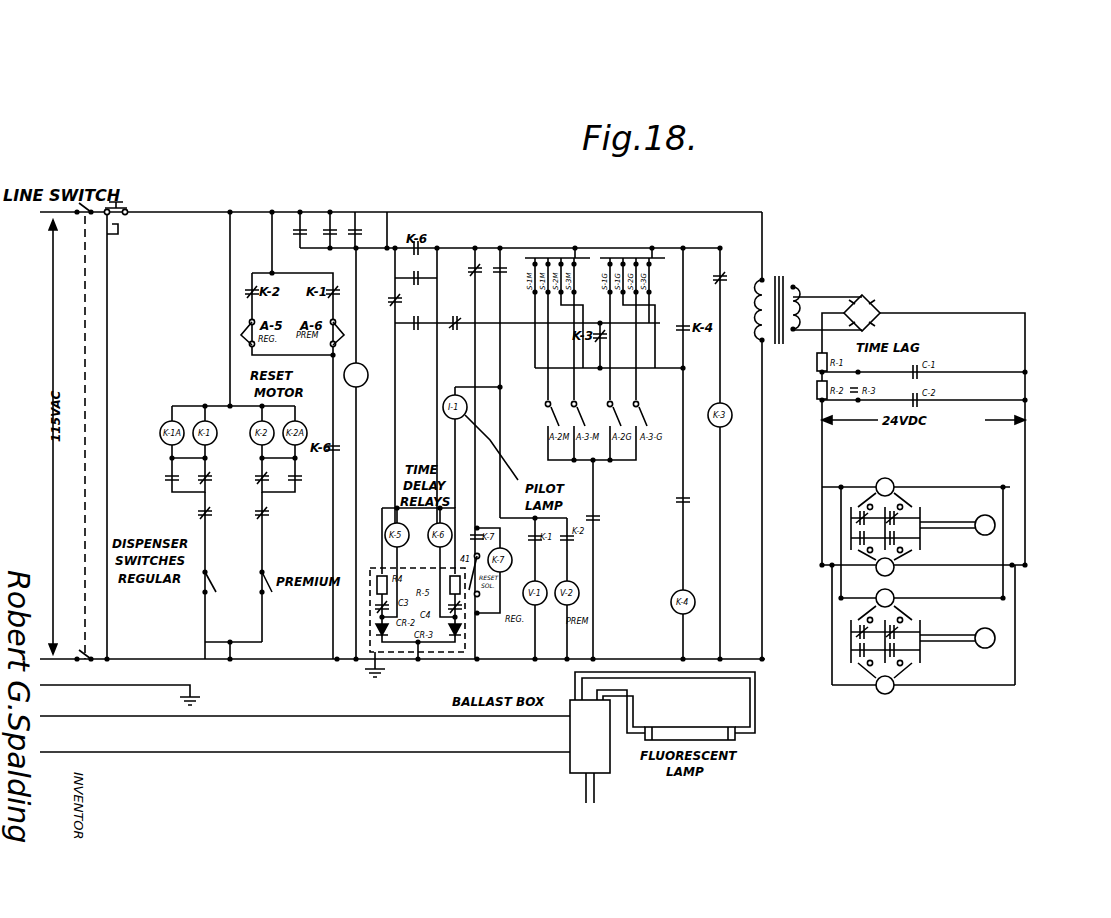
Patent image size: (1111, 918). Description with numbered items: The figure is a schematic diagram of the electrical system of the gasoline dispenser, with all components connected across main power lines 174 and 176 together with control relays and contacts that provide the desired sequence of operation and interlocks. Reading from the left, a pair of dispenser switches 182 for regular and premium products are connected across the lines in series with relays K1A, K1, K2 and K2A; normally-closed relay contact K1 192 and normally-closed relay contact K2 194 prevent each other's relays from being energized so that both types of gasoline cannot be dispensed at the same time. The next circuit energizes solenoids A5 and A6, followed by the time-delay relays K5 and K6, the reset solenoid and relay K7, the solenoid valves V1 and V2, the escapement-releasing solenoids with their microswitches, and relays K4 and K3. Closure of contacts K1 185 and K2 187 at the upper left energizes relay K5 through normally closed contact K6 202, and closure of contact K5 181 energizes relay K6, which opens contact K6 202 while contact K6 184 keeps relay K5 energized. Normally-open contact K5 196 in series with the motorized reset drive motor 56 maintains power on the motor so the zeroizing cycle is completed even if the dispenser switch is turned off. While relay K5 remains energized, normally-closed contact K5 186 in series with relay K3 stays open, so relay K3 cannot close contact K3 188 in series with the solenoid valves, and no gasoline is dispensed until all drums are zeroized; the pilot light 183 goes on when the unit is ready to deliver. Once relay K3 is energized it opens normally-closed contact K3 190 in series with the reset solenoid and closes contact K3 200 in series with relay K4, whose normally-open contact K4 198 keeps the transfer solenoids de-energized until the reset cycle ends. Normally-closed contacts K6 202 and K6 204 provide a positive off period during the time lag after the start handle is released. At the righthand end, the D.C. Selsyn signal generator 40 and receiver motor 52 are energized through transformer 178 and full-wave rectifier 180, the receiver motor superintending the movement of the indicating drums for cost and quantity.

The main power line 174 is at (172, 214).
The main power line 176 is at (132, 659).
The relay contact K1 185 is at (298, 225).
The relay contact K2 187 is at (326, 226).
The normally-open relay contact K5 196 is at (372, 215).
The normally-closed relay contact K3 190 is at (473, 262).
The relay contact K3 188 is at (505, 262).
The normally-open relay contact K5 181 is at (425, 284).
The normally-closed relay contact K6 202 is at (388, 298).
The relay contact K6 184 is at (527, 341).
The pilot light 183 is at (458, 345).
The reset drive motor 56 is at (362, 386).
The transformer 178 is at (796, 285).
The full-wave rectifier 180 is at (866, 296).
The normally-closed relay contact K5 186 is at (722, 290).
The normally-open relay contact K4 198 is at (600, 519).
The relay contact K3 200 is at (704, 507).
The D.C. Selsyn signal generator 40 is at (886, 478).
The receiver motor 52 is at (996, 520).
The normally-closed relay contact K6 204 is at (208, 470).
The normally-closed relay contact K1 192 is at (270, 513).
The normally-closed relay contact K2 194 is at (208, 520).
The dispenser switches 182 is at (260, 582).